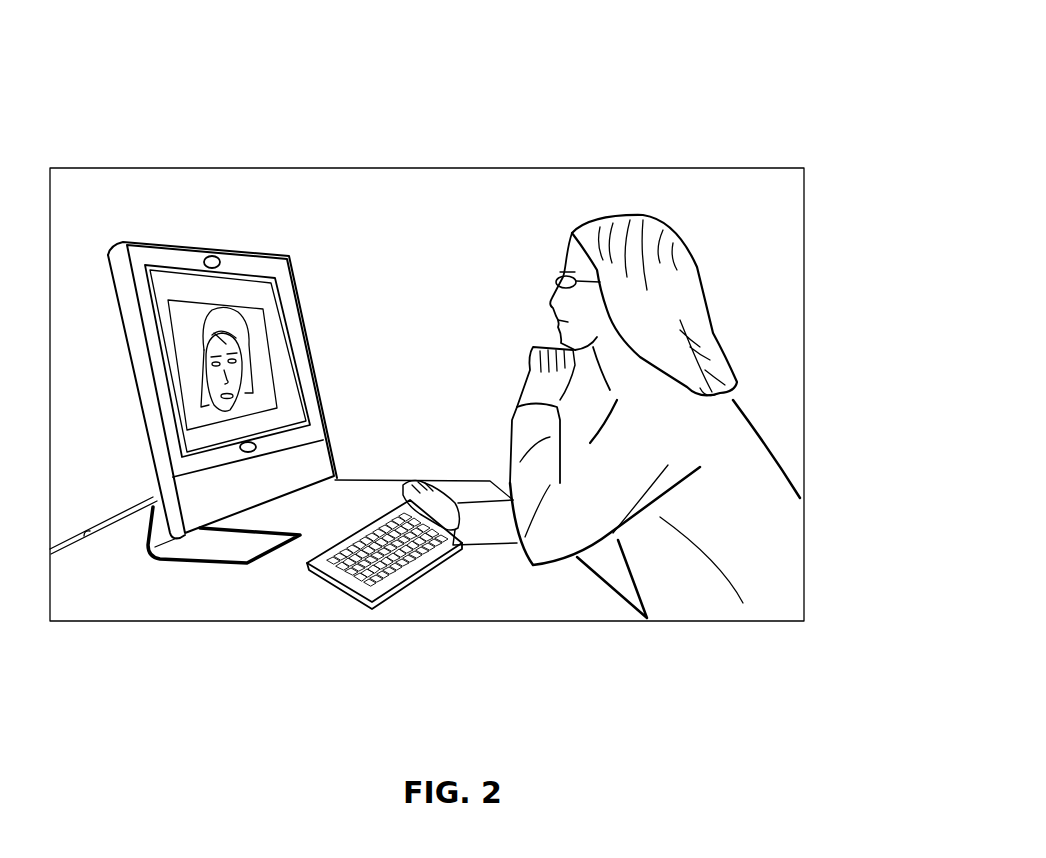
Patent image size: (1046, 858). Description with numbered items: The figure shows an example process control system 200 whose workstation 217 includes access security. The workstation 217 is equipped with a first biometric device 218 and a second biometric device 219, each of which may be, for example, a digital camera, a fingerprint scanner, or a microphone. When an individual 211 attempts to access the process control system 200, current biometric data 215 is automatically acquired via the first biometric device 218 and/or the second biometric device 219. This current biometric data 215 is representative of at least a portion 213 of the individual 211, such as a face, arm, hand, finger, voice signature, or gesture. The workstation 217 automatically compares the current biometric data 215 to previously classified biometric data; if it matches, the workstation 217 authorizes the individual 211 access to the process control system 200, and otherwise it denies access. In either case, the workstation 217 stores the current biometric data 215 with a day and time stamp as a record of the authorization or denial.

The process control system 200 is at (622, 76).
The individual 211 is at (640, 368).
The portion of the individual 213 is at (550, 290).
The current biometric data 215 is at (227, 345).
The workstation 217 is at (178, 408).
The first biometric device 218 is at (212, 256).
The second biometric device 219 is at (250, 453).